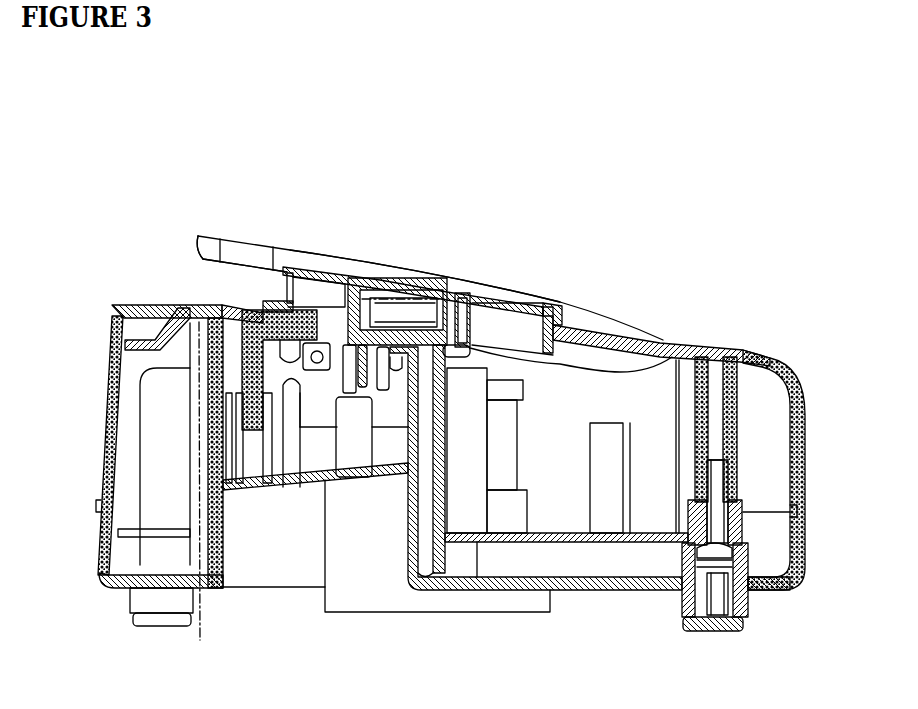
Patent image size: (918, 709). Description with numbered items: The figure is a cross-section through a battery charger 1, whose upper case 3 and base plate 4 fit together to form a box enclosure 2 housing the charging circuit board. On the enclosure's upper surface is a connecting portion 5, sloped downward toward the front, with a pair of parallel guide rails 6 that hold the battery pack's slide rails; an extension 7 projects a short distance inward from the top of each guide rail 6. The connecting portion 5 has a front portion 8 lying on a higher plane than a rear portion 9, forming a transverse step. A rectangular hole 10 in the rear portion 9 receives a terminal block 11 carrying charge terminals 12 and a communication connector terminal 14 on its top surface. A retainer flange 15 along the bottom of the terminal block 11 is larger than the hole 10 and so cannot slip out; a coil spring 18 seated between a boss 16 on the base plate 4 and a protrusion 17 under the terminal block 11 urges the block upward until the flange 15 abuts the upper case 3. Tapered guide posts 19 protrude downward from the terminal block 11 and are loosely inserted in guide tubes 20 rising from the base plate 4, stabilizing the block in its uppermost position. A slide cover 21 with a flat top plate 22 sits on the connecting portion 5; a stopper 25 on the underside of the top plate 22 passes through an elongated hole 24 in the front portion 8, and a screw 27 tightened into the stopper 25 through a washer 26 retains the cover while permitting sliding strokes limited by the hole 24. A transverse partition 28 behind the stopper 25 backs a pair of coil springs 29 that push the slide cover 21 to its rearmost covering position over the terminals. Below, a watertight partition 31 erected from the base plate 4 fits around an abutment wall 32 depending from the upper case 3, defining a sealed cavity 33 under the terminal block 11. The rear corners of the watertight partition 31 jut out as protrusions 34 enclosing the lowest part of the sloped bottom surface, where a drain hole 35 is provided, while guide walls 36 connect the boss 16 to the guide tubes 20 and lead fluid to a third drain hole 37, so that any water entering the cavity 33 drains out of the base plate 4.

The battery charger 1 is at (567, 240).
The box enclosure 2 is at (723, 340).
The upper case 3 is at (778, 373).
The base plate 4 is at (776, 590).
The connecting portion 5 is at (357, 227).
The guide rails 6 is at (203, 232).
The extension 7 is at (258, 250).
The front portion 8 is at (595, 335).
The rear portion 9 is at (227, 307).
The rectangular hole 10 is at (257, 253).
The terminal block 11 is at (270, 297).
The charge terminals 12 is at (290, 258).
The communication connector terminal 14 is at (313, 290).
The retainer flange 15 is at (391, 283).
The boss 16 is at (278, 370).
The protrusion 17 is at (338, 262).
The coil spring 18 is at (360, 463).
The guide posts 19 is at (430, 300).
The guide tubes 20 is at (380, 458).
The slide cover 21 is at (503, 292).
The top plate 22 is at (523, 300).
The elongated hole 24 is at (513, 333).
The stopper 25 is at (480, 295).
The washer 26 is at (467, 347).
The screw 27 is at (457, 357).
The transverse partition 28 is at (383, 268).
The coil springs 29 is at (420, 300).
The watertight partition 31 is at (210, 443).
The abutment wall 32 is at (195, 316).
The cavity 33 is at (398, 441).
The protrusions 34 is at (200, 412).
The drain hole 35 is at (212, 495).
The guide walls 36 is at (388, 477).
The third drain hole 37 is at (317, 490).